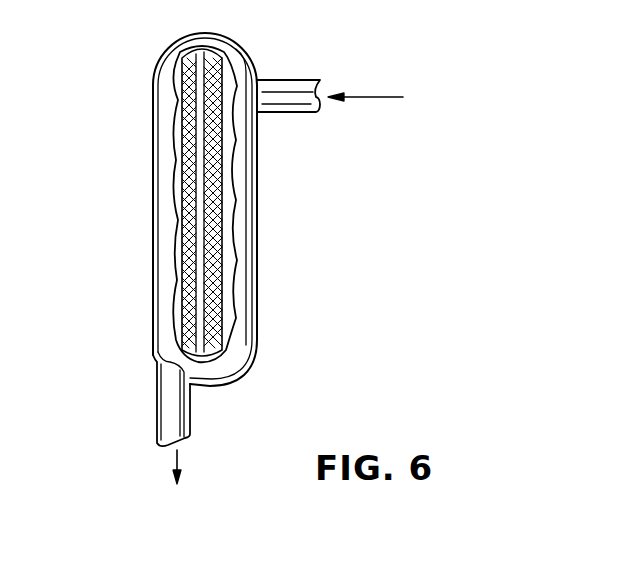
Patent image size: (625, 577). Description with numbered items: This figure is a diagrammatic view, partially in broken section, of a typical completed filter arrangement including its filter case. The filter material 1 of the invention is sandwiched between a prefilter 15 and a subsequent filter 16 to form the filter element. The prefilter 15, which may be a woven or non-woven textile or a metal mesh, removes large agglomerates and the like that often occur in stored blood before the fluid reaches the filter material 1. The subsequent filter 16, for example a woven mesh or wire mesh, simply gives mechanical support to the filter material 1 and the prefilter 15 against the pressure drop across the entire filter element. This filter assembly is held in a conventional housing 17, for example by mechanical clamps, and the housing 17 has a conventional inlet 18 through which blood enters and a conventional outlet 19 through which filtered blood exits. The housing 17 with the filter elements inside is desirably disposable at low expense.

The filter material 1 is at (200, 198).
The prefilter 15 is at (221, 223).
The subsequent filter 16 is at (181, 247).
The housing 17 is at (258, 145).
The inlet 18 is at (298, 88).
The outlet 19 is at (190, 418).